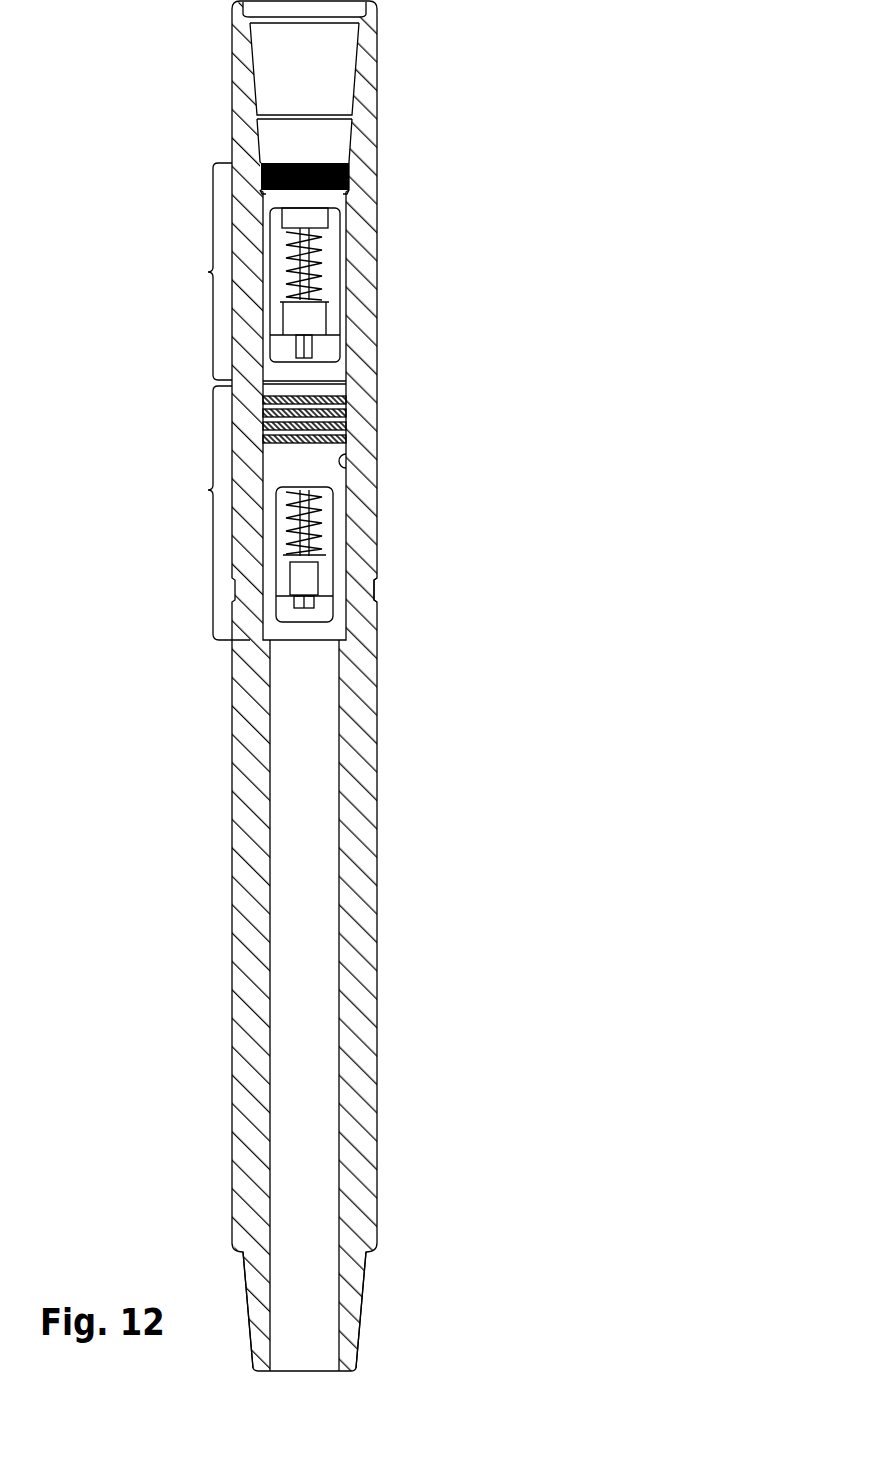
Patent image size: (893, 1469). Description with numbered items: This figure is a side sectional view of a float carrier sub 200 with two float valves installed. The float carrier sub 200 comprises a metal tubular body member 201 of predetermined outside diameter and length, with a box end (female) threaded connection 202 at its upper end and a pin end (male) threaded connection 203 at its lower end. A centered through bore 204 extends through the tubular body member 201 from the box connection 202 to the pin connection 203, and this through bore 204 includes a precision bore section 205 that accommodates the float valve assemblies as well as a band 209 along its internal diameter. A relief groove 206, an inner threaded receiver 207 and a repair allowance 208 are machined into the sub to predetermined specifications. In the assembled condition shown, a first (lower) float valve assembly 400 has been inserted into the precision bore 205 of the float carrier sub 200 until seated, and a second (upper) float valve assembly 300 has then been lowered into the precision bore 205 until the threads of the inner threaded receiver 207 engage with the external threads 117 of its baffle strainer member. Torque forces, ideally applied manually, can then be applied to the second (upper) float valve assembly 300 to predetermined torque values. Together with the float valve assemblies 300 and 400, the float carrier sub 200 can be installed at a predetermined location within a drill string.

The float carrier sub 200 is at (334, 686).
The tubular body member 201 is at (265, 826).
The box end threaded connection 202 is at (305, 98).
The pin end threaded connection 203 is at (355, 1286).
The through bore 204 is at (305, 1008).
The precision bore section 205 is at (344, 468).
The relief groove 206 is at (350, 188).
The inner threaded receiver 207 is at (258, 181).
The repair allowance 208 is at (335, 136).
The band 209 is at (374, 596).
The external threads 117 is at (350, 160).
The second (upper) float valve assembly 300 is at (208, 272).
The first (lower) float valve assembly 400 is at (208, 490).